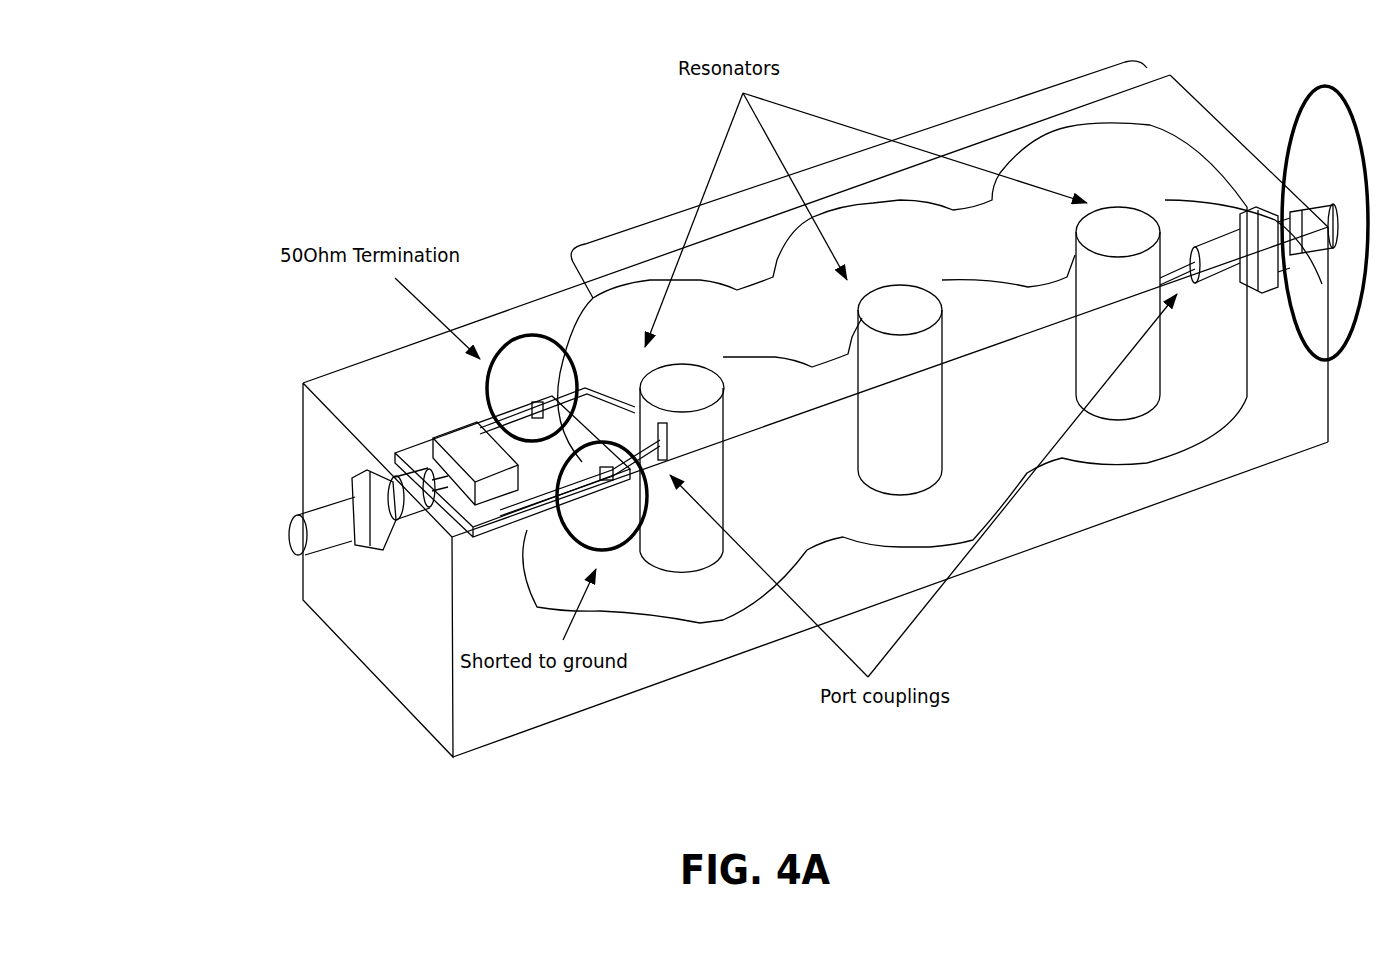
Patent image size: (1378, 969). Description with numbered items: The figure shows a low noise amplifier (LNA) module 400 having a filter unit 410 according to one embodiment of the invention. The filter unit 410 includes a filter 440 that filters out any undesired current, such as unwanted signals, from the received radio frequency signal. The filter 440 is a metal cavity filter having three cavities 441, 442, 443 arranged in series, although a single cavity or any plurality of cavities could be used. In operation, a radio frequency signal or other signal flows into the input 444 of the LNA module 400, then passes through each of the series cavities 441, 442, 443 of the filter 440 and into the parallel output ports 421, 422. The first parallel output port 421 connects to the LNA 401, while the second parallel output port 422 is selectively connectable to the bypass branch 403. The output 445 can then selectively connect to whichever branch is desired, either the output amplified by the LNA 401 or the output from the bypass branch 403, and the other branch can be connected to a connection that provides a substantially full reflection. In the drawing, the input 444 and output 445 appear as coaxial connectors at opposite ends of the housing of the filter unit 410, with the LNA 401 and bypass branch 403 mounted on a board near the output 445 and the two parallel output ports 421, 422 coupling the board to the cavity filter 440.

The low noise amplifier module 400 is at (205, 192).
The low noise amplifier 401 is at (457, 437).
The bypass branch 403 is at (455, 615).
The filter unit 410 is at (512, 238).
The first parallel output port 421 is at (593, 377).
The second parallel output port 422 is at (618, 555).
The filter 440 is at (962, 118).
The cavity 441 is at (1125, 420).
The cavity 442 is at (900, 495).
The cavity 443 is at (697, 565).
The input 444 is at (1310, 375).
The output 445 is at (343, 560).